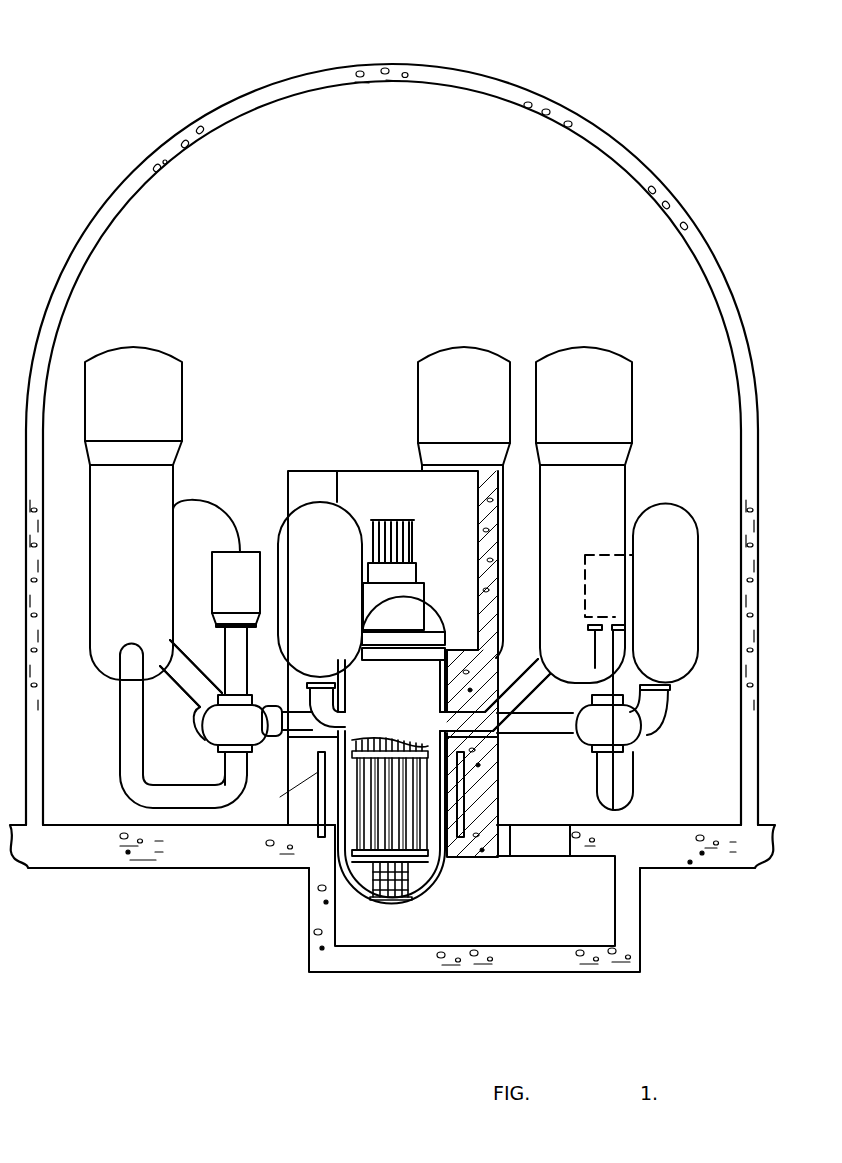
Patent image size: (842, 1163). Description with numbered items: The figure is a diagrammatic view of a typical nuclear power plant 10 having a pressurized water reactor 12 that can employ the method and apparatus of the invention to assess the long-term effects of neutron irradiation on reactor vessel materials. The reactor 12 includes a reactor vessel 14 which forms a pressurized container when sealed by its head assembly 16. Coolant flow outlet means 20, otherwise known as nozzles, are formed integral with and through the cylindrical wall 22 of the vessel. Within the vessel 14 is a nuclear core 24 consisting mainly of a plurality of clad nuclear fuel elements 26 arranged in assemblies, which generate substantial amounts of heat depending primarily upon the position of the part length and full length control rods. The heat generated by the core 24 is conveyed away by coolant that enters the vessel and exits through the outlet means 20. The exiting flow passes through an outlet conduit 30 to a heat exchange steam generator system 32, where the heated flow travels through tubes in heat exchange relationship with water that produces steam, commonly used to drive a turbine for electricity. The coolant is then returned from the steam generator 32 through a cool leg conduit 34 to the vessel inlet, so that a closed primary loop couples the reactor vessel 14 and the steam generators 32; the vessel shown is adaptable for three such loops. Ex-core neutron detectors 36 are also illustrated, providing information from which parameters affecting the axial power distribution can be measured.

The nuclear power plant 10 is at (630, 77).
The pressurized water reactor 12 is at (352, 471).
The reactor vessel 14 is at (380, 705).
The head assembly 16 is at (428, 620).
The coolant flow outlet means 20 is at (423, 712).
The cylindrical wall 22 is at (420, 900).
The nuclear core 24 is at (378, 818).
The clad nuclear fuel elements 26 is at (413, 856).
The outlet conduit 30 is at (523, 658).
The steam generator 32 is at (141, 422).
The cool leg conduit 34 is at (556, 734).
The ex-core neutron detectors 36 is at (470, 800).